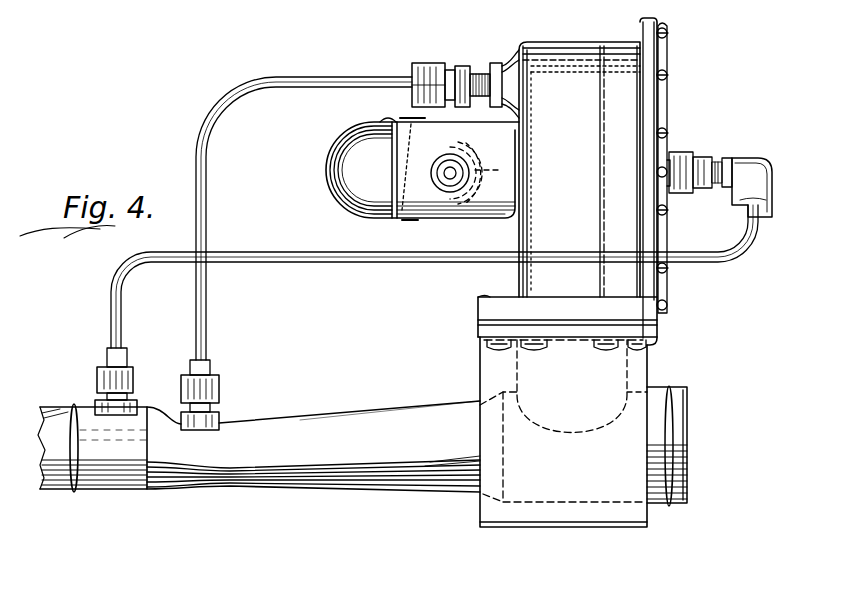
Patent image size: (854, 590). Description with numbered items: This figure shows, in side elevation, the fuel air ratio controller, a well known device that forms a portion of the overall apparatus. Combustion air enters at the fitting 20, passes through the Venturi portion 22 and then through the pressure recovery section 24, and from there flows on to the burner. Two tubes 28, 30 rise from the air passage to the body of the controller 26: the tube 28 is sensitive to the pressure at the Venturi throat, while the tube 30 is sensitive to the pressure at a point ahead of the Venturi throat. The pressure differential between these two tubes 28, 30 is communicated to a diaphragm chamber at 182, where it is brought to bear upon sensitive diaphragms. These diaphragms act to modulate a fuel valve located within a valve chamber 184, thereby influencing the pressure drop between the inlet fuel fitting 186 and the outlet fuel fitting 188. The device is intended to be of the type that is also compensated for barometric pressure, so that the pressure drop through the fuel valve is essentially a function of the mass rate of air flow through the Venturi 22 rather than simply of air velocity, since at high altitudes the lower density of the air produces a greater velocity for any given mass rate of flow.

The fitting 20 is at (42, 403).
The Venturi portion 22 is at (203, 450).
The pressure recovery section 24 is at (423, 424).
The housing 26 is at (536, 29).
The tube 28 is at (207, 325).
The tube 30 is at (372, 261).
The diaphragm chamber 182 is at (528, 139).
The valve chamber 184 is at (482, 207).
The inlet fuel fitting 186 is at (515, 168).
The outlet fuel fitting 188 is at (449, 180).